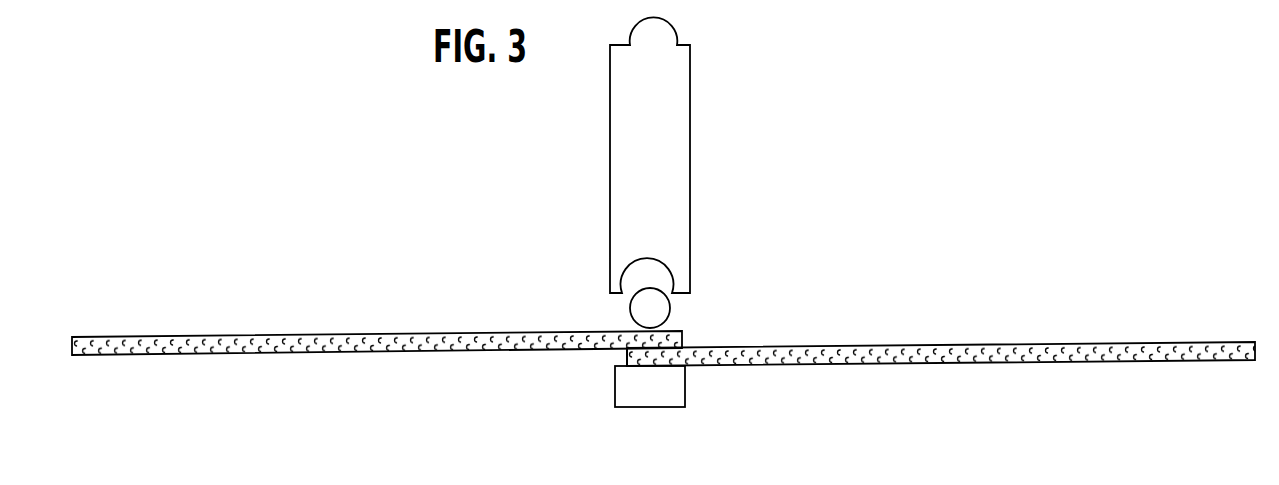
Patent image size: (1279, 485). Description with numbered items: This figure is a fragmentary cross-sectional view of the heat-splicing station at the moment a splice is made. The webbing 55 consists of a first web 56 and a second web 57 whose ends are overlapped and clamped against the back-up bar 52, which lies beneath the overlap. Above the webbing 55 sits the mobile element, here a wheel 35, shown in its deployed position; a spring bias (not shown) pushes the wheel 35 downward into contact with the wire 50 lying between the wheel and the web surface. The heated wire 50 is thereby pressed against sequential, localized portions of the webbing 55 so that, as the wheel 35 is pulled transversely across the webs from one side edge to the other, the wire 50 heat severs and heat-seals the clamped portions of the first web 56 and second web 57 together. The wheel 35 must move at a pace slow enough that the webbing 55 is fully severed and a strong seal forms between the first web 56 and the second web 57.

The wheel 35 is at (690, 135).
The wire 50 is at (670, 312).
The back-up bar 52 is at (685, 385).
The webbing 55 is at (627, 351).
The first web 56 is at (395, 333).
The second web 57 is at (901, 363).